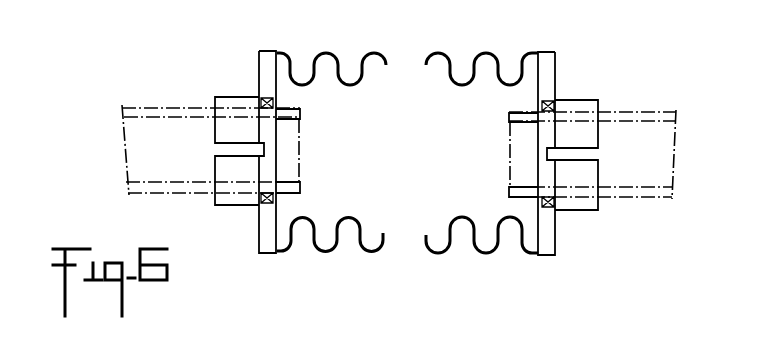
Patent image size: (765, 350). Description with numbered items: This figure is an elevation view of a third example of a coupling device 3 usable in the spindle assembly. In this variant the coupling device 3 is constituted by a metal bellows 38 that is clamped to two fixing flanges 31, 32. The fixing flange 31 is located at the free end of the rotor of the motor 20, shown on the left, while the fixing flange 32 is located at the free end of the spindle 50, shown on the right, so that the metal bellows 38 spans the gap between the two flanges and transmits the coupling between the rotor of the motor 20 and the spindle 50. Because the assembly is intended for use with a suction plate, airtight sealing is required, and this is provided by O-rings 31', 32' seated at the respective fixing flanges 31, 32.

The coupling device 3 is at (256, 166).
The rotor of the motor 20 is at (138, 107).
The fixing flange 31 is at (254, 134).
The O-ring 31' is at (238, 134).
The fixing flange 32 is at (549, 135).
The O-ring 32' is at (579, 137).
The metal bellows 38 is at (375, 50).
The spindle 50 is at (647, 197).